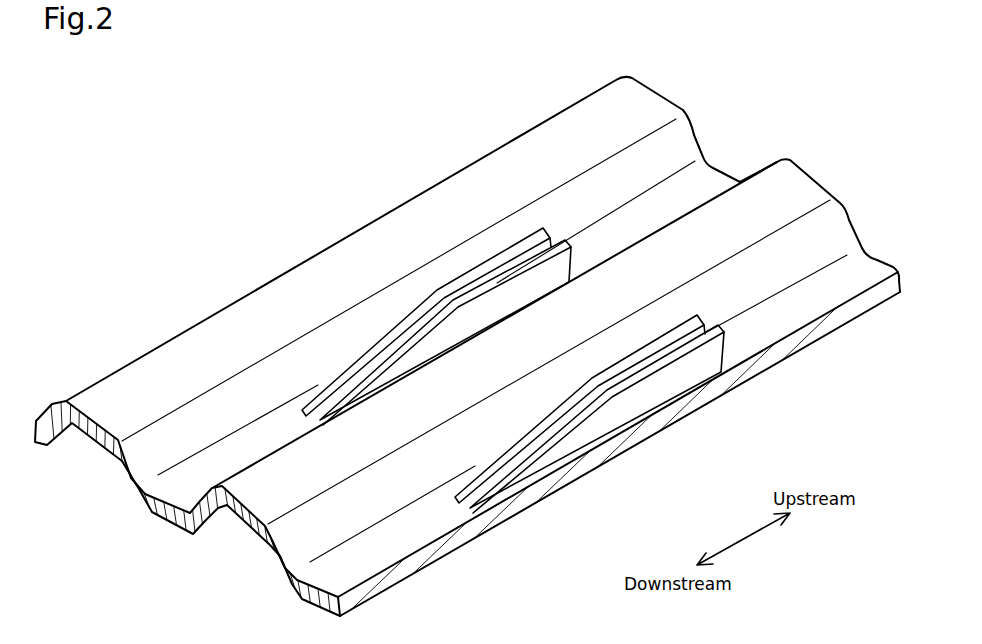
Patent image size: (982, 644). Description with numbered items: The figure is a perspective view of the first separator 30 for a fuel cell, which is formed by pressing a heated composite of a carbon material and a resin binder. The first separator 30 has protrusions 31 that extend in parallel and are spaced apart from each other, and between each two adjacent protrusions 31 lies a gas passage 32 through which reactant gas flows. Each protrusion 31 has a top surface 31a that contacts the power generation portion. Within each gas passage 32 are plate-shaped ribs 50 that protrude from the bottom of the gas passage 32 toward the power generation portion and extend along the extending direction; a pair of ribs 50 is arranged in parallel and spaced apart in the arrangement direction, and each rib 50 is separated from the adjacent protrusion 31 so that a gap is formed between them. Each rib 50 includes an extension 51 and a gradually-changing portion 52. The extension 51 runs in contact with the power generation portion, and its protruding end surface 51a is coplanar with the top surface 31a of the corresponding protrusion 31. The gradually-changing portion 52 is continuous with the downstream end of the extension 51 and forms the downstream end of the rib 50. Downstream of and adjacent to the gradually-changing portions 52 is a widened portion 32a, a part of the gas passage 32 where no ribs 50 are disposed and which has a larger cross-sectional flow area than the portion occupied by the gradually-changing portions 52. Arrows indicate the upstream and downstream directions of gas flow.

The first separator 30 is at (799, 62).
The protrusion 31 is at (545, 137).
The top surface 31a is at (787, 215).
The gas passage 32 is at (713, 183).
The widened portion 32a is at (280, 419).
The rib 50 is at (497, 270).
The extension 51 is at (648, 350).
The protruding end surface 51a is at (745, 352).
The gradually-changing portion 52 is at (562, 405).